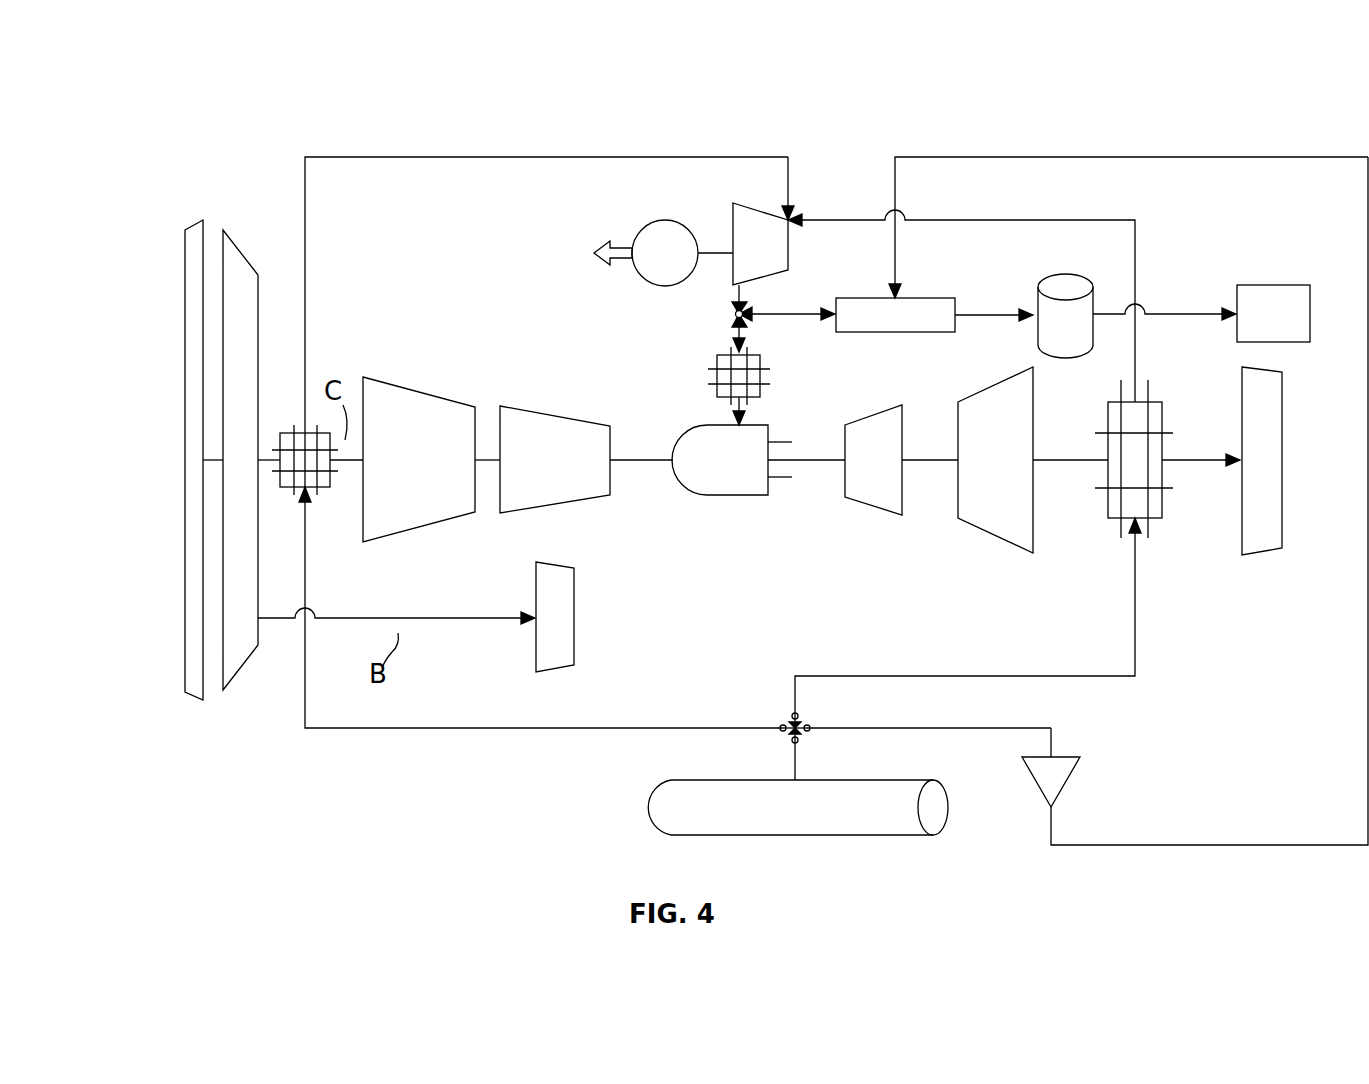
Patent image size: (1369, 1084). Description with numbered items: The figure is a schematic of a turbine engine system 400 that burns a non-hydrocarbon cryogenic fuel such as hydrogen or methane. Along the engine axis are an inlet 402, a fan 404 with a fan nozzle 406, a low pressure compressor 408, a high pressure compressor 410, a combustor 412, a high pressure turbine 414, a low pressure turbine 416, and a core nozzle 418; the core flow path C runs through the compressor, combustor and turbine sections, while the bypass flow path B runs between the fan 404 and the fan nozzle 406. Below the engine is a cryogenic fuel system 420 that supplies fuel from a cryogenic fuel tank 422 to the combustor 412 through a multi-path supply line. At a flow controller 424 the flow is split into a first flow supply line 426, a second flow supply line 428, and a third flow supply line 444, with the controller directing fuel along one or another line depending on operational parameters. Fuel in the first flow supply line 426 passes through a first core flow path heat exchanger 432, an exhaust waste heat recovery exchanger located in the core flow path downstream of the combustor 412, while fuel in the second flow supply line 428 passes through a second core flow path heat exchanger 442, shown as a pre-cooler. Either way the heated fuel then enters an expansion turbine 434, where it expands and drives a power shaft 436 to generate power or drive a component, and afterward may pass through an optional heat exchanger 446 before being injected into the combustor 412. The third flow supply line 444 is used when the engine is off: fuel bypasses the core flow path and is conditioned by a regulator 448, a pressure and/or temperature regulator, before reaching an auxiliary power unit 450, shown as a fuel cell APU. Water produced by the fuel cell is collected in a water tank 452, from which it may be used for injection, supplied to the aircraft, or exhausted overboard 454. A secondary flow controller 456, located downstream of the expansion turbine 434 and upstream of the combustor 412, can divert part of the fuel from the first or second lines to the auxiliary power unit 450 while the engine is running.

The turbine engine system 400 is at (112, 102).
The inlet 402 is at (190, 228).
The fan 404 is at (228, 229).
The fan nozzle 406 is at (552, 674).
The low pressure compressor 408 is at (416, 388).
The high pressure compressor 410 is at (556, 414).
The combustor 412 is at (760, 422).
The high pressure turbine 414 is at (873, 415).
The low pressure turbine 416 is at (1010, 380).
The core nozzle 418 is at (1283, 406).
The cryogenic fuel system 420 is at (1100, 706).
The cryogenic fuel tank 422 is at (832, 838).
The flow controller 424 is at (805, 714).
The first flow supply line 426 is at (885, 675).
The second flow supply line 428 is at (382, 730).
The first core flow path heat exchanger 432 is at (1155, 520).
The expansion turbine 434 is at (742, 232).
The power shaft 436 is at (636, 282).
The second core flow path heat exchanger 442 is at (322, 493).
The third flow supply line 444 is at (1220, 845).
The heat exchanger 446 is at (716, 372).
The regulator 448 is at (1065, 782).
The auxiliary power unit 450 is at (930, 298).
The water tank 452 is at (1070, 275).
The overboard 454 is at (1201, 313).
The secondary flow controller 456 is at (733, 315).